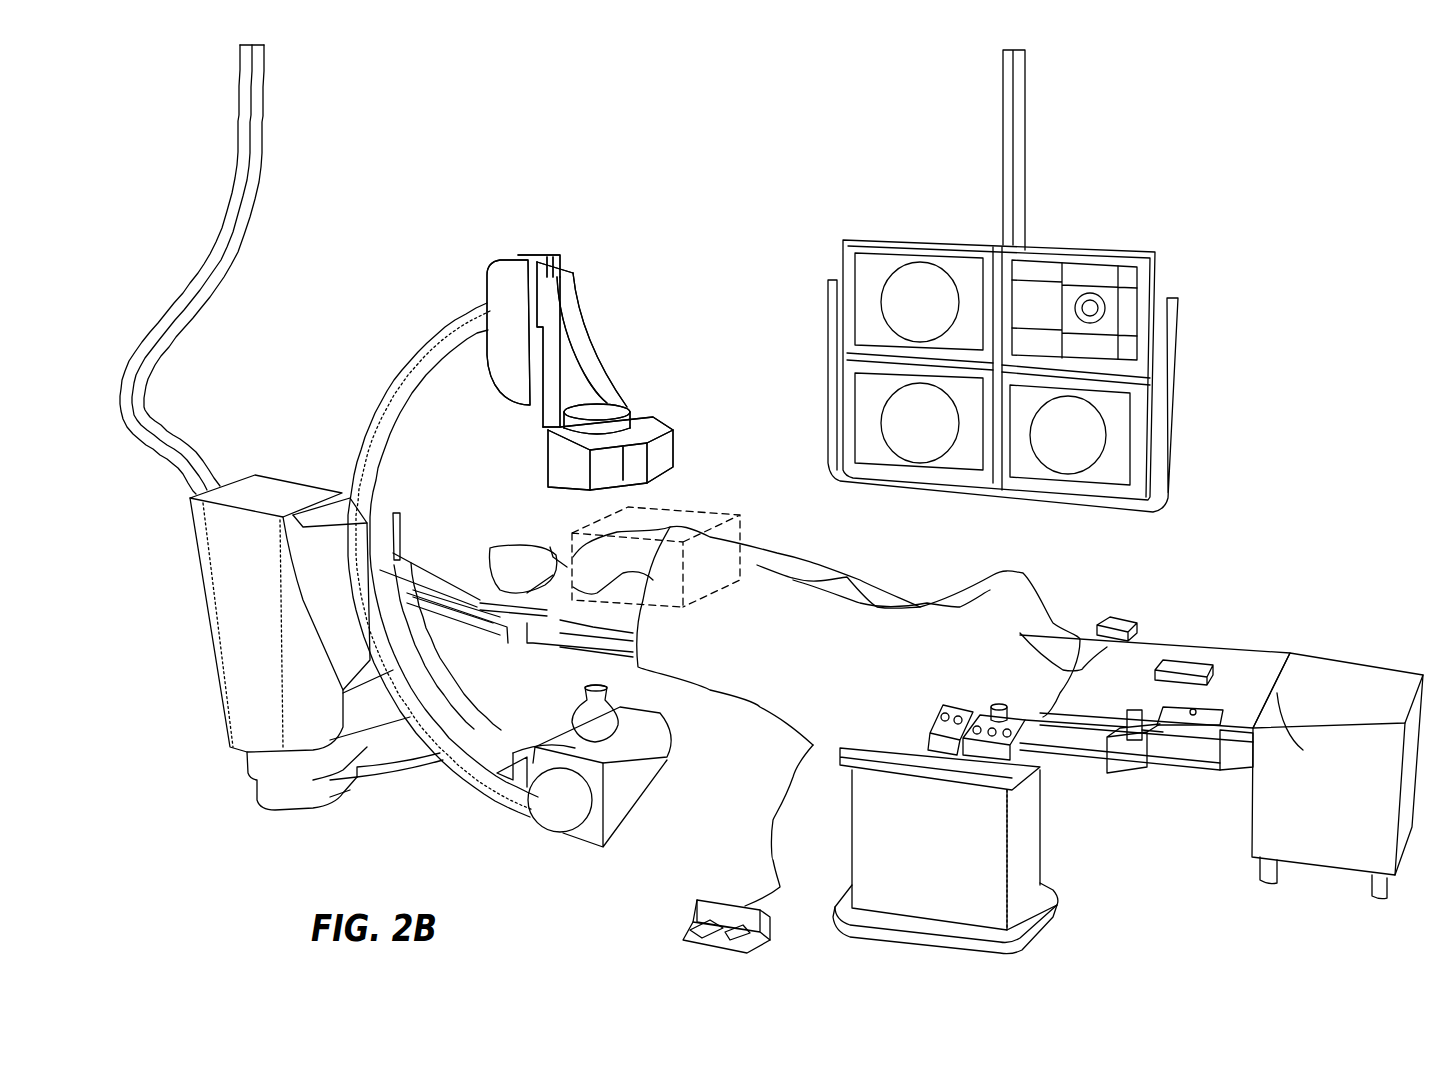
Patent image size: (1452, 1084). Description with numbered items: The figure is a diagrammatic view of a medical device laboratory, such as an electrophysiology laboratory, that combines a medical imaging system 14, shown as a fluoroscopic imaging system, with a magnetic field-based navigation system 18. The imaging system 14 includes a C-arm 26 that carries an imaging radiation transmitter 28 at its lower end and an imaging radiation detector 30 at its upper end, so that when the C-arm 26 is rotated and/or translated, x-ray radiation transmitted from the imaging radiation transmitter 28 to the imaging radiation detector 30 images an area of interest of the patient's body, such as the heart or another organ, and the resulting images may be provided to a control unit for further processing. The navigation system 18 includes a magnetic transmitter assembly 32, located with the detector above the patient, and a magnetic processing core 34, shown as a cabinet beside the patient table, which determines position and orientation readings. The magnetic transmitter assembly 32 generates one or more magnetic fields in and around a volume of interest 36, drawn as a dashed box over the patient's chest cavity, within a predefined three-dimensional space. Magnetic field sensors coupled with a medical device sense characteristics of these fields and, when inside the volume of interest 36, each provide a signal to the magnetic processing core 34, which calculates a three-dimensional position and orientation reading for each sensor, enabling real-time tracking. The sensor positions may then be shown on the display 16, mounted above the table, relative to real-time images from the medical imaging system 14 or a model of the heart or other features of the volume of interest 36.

The medical imaging system 14 is at (208, 727).
The display 16 is at (1102, 247).
The magnetic field-based navigation system 18 is at (684, 324).
The C-arm 26 is at (367, 374).
The imaging radiation transmitter 28 is at (640, 757).
The imaging radiation detector 30 is at (657, 437).
The magnetic transmitter assembly 32 is at (630, 372).
The magnetic processing core 34 is at (1353, 663).
The volume of interest 36 is at (737, 508).